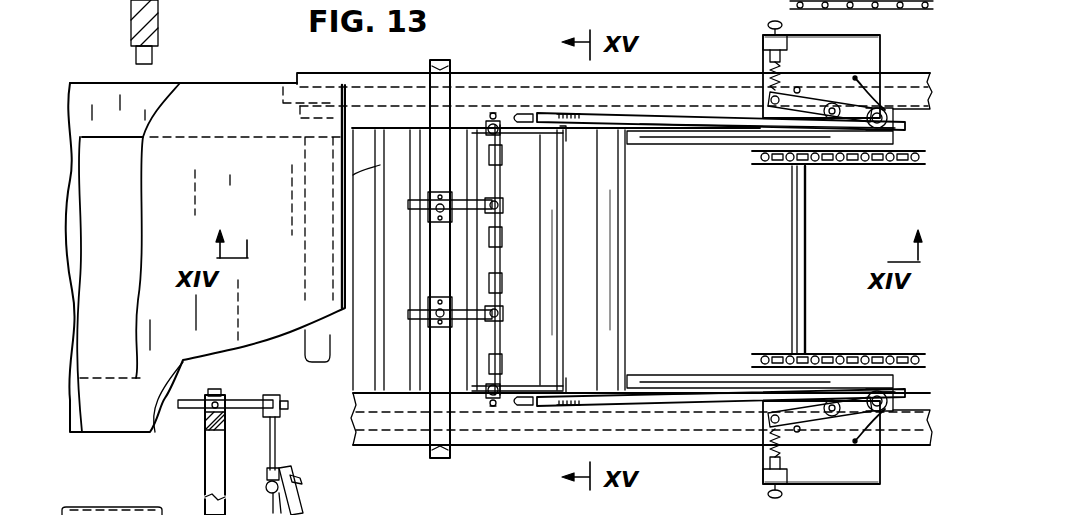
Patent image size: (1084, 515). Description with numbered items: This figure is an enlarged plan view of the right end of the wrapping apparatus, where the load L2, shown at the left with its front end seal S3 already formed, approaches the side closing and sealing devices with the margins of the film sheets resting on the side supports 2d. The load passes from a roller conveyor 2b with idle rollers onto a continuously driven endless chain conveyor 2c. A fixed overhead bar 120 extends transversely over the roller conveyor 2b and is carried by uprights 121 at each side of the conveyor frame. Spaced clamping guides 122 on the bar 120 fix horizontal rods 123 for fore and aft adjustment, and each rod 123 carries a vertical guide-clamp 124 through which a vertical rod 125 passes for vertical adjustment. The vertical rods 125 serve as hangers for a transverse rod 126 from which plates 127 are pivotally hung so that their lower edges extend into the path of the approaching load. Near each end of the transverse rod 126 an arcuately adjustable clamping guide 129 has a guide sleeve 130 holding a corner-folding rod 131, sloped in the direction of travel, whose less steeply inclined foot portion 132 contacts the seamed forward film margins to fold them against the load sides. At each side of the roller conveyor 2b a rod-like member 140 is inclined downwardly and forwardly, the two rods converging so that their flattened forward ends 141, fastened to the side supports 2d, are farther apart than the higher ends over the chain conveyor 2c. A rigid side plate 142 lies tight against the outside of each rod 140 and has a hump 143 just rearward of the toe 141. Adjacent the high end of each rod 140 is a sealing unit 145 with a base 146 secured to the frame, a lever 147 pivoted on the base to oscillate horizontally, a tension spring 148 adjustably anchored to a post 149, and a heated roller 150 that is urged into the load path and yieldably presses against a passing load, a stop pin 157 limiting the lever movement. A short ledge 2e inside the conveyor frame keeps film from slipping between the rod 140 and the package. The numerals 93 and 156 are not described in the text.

The adjusting screw 93 is at (159, 3).
The fixed overhead bar 120 is at (207, 428).
The uprights 121 is at (452, 63).
The clamping guides 122 is at (432, 205).
The horizontal rods 123 is at (466, 201).
The vertical guide-clamp 124 is at (490, 214).
The vertical rod 125 is at (503, 210).
The transverse rod 126 is at (493, 262).
The plates 127 is at (503, 199).
The arcuately adjustable clamping guide 129 is at (495, 114).
The guide sleeve 130 is at (490, 120).
The corner-folding rod 131 is at (528, 134).
The foot portion 132 is at (567, 142).
The rod-like member 140 is at (709, 145).
The flattened forward end 141 is at (525, 114).
The rigid side plate 142 is at (681, 116).
The hump 143 is at (585, 114).
The sealing unit 145 is at (882, 50).
The base 146 is at (858, 44).
The lever 147 is at (826, 104).
The tension spring 148 is at (773, 76).
The post 149 is at (768, 40).
The heated roller 150 is at (895, 126).
The latch lever 156 is at (860, 83).
The stop pin 157 is at (803, 79).
The roller table or conveyor 2b is at (630, 274).
The endless chain conveyor 2c is at (850, 170).
The side supports 2d is at (405, 77).
The ledge or shelf 2e is at (726, 146).
The front end seal S3 is at (411, 158).
The load L2 is at (115, 213).